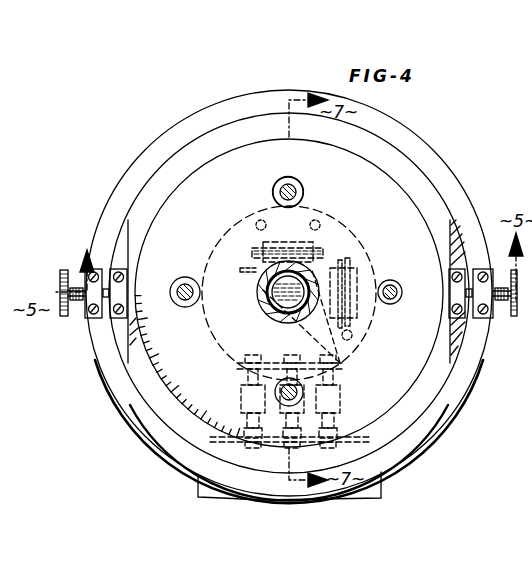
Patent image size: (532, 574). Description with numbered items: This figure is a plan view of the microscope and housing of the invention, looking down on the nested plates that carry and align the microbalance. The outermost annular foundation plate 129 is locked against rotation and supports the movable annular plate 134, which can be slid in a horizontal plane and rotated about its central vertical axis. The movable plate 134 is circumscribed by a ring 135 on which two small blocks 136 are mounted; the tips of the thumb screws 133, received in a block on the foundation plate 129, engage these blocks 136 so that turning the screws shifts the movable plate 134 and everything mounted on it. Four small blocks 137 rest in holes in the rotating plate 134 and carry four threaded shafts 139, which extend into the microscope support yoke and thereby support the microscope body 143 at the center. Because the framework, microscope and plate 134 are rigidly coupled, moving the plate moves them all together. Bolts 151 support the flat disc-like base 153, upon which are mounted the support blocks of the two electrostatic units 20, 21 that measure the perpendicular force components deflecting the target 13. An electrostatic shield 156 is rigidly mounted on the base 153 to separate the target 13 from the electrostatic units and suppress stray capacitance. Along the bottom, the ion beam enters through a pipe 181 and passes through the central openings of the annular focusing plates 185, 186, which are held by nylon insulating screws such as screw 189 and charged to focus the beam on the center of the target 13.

The target 13 is at (258, 301).
The electrostatic unit 20 is at (318, 243).
The electrostatic unit 21 is at (349, 271).
The annular foundation plate 129 is at (187, 123).
The thumb screws 133 is at (70, 255).
The annular plate 134 is at (202, 172).
The ring 135 is at (155, 184).
The small blocks 136 is at (112, 318).
The small blocks 137 is at (304, 193).
The threaded shafts 139 is at (189, 285).
The microscope body 143 is at (274, 317).
The bolts 151 is at (240, 223).
The flat disc-like base 153 is at (258, 219).
The electrostatic shield 156 is at (250, 270).
The pipe 181 is at (381, 487).
The annular focusing plate 185 is at (345, 369).
The annular focusing plate 186 is at (213, 438).
The nylon insulating screw 189 is at (343, 399).